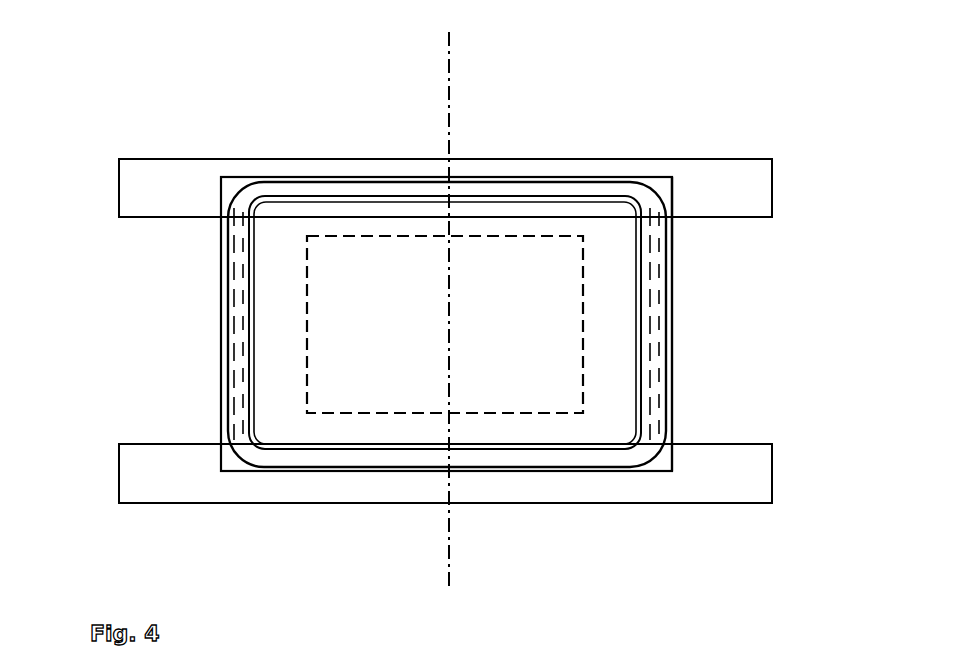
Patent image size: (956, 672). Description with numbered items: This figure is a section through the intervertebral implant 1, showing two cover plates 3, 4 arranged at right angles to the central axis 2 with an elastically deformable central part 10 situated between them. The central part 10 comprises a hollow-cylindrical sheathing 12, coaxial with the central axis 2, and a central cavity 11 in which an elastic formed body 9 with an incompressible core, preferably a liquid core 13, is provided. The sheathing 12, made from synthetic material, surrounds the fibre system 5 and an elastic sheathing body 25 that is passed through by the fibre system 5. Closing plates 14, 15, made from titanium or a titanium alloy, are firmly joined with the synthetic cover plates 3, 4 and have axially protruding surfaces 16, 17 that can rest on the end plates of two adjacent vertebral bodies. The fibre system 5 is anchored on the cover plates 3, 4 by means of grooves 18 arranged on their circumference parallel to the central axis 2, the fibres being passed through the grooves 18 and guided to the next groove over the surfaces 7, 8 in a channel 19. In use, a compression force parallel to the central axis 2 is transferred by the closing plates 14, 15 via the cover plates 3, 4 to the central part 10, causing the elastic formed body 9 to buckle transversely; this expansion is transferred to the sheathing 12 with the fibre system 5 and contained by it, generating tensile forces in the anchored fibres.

The intervertebral implant 1 is at (165, 130).
The central axis 2 is at (452, 75).
The cover plate 3 is at (612, 472).
The cover plate 4 is at (642, 165).
The fibre system 5 is at (237, 292).
The surface 7 is at (542, 472).
The surface 8 is at (405, 177).
The elastic formed body 9 is at (390, 428).
The central part 10 is at (745, 320).
The central cavity 11 is at (252, 358).
The sheathing 12 is at (673, 277).
The liquid core 13 is at (358, 381).
The closing plate 14 is at (163, 193).
The closing plate 15 is at (137, 483).
The axially protruding surface 16 is at (303, 160).
The axially protruding surface 17 is at (717, 503).
The groove 18 is at (673, 185).
The channel 19 is at (560, 197).
The elastic sheathing body 25 is at (225, 273).